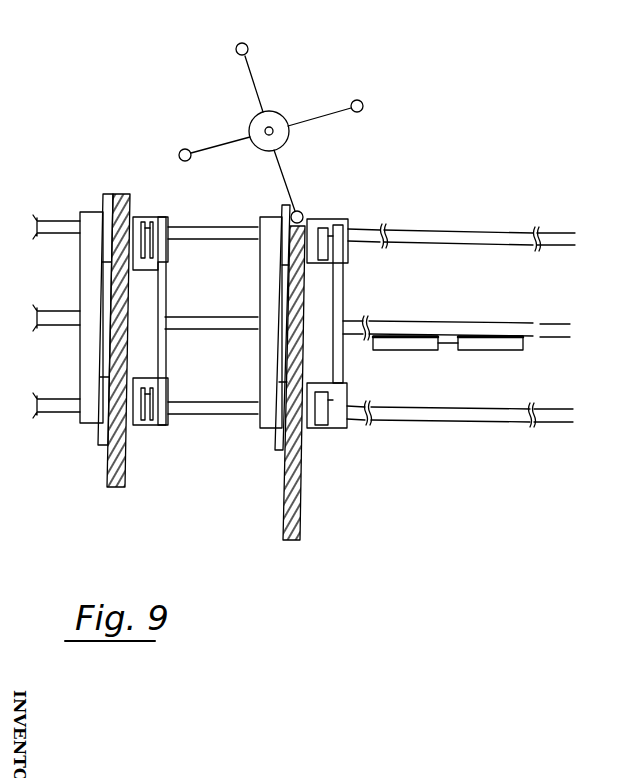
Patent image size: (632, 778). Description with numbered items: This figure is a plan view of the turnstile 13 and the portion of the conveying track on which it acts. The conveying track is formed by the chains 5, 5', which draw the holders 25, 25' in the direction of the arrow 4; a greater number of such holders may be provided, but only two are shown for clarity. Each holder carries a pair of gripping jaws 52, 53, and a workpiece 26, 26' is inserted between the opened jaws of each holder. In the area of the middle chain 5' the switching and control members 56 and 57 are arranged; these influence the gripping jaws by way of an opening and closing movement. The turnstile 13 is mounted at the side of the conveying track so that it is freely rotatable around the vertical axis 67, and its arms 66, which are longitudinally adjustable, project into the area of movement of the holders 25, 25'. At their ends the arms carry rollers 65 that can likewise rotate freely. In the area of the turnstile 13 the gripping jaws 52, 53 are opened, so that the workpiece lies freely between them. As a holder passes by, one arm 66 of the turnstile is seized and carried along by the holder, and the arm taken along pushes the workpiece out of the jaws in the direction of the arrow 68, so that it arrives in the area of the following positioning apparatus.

The arrow 4 is at (575, 298).
The chain 5 is at (304, 327).
The middle chain 5' is at (301, 310).
The turnstile 13 is at (318, 94).
The holder 25 is at (130, 343).
The holder 25' is at (333, 380).
The workpiece 26 is at (105, 368).
The workpiece 26' is at (281, 410).
The gripping jaw 52 is at (103, 243).
The gripping jaw 53 is at (175, 217).
The switching and control member 56 is at (414, 350).
The switching and control member 57 is at (493, 350).
The roller 65 is at (363, 108).
The arm 66 is at (248, 62).
The vertical axis 67 is at (273, 133).
The arrow 68 is at (317, 517).